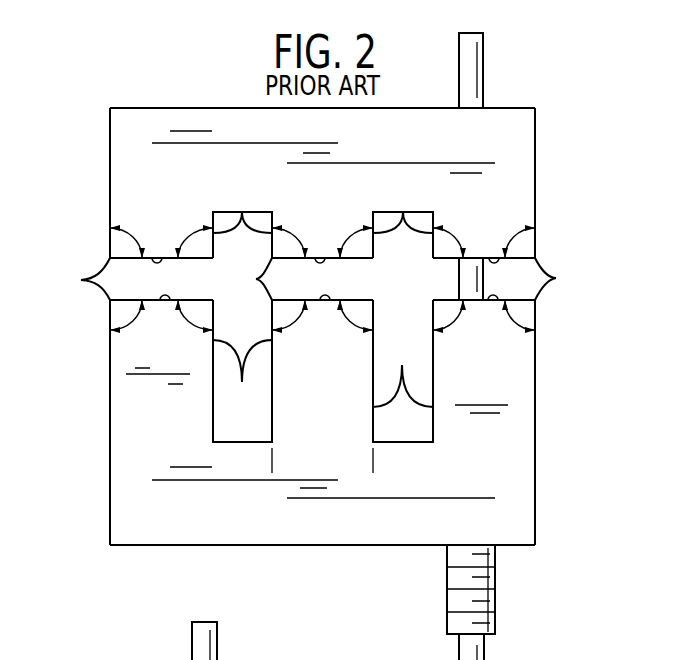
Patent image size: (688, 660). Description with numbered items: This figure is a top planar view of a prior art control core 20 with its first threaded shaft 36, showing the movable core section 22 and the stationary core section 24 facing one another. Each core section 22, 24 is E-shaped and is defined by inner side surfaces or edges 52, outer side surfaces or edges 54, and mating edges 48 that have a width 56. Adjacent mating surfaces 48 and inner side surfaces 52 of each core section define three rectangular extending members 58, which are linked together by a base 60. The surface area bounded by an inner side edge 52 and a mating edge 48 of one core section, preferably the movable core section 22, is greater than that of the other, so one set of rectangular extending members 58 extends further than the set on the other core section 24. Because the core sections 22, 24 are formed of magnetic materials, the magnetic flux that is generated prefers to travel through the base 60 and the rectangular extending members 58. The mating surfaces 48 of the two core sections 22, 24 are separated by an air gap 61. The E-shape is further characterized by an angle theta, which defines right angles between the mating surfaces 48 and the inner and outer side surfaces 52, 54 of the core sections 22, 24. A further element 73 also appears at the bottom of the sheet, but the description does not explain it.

The control core 20 is at (92, 76).
The movable core section 22 is at (100, 478).
The stationary core section 24 is at (165, 89).
The first threaded shaft 36 is at (447, 590).
The mating edges 48 is at (152, 258).
The inner side surfaces 52 is at (242, 212).
The outer side surfaces 54 is at (110, 183).
The width 56 is at (373, 464).
The rectangular extending members 58 is at (81, 280).
The base 60 is at (375, 136).
The air gap 61 is at (447, 280).
The support post 73 is at (77, 659).